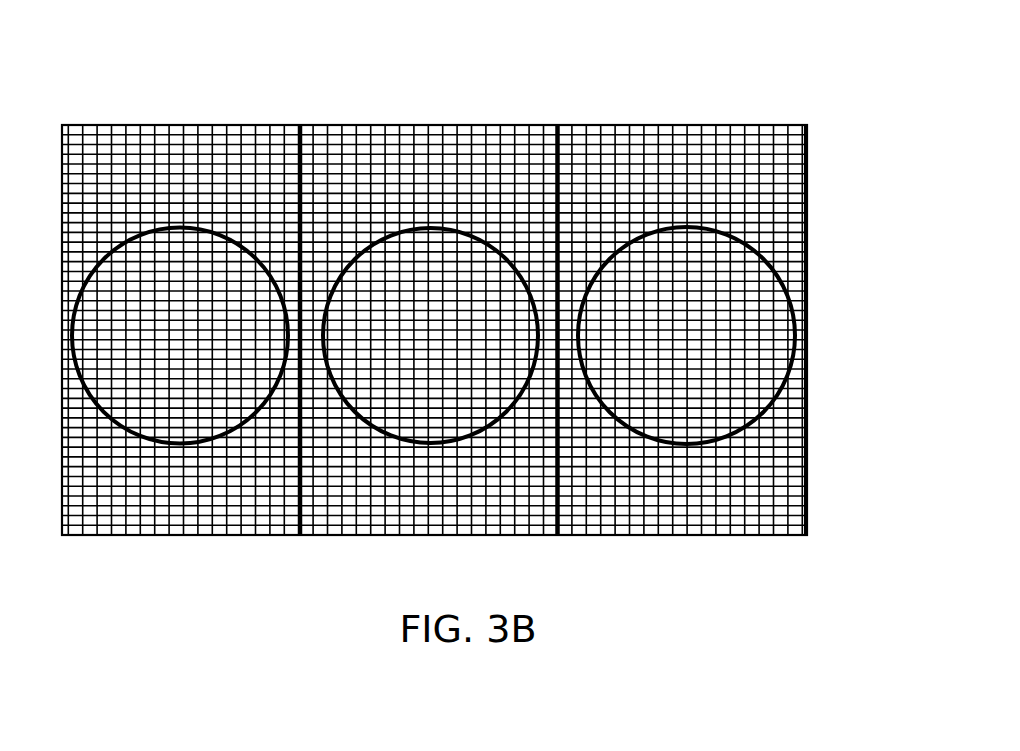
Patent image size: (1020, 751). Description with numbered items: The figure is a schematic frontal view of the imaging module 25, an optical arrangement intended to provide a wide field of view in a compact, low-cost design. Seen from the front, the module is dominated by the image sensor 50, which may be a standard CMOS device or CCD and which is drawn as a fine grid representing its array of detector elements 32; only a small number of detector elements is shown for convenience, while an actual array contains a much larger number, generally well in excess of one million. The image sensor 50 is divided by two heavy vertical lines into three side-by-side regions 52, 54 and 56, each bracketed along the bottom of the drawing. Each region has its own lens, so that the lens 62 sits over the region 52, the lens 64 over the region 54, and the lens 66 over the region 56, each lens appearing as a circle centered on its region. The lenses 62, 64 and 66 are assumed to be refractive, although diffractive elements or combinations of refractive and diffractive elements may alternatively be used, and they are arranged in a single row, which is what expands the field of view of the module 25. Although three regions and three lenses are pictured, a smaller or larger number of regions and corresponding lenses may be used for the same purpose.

The imaging module 25 is at (833, 81).
The image sensor 50 is at (807, 141).
The detector elements 32 is at (806, 178).
The first region 52 is at (297, 543).
The second region 54 is at (555, 543).
The third region 56 is at (807, 543).
The lens 62 is at (165, 350).
The lens 64 is at (416, 350).
The lens 66 is at (672, 350).